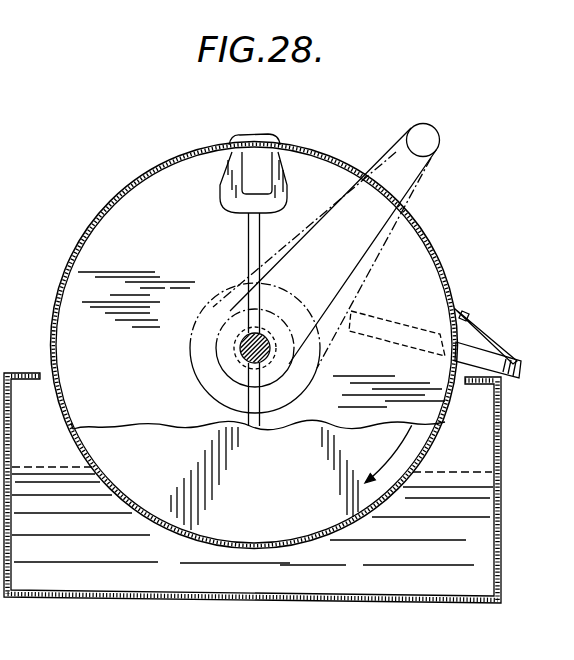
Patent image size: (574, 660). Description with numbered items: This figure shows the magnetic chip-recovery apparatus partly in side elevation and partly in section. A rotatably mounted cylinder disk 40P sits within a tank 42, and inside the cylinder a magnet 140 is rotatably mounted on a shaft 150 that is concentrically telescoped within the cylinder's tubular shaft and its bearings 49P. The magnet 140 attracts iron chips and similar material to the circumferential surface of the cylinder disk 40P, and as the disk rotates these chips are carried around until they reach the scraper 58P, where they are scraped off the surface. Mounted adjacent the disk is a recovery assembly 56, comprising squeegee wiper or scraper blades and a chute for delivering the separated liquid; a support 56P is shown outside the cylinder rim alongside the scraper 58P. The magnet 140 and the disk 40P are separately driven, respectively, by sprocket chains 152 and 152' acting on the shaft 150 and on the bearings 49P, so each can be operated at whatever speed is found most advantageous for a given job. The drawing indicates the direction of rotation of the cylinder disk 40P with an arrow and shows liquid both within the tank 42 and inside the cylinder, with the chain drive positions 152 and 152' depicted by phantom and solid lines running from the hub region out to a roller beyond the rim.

The cylinder disk 40P is at (99, 217).
The tank 42 is at (62, 597).
The bearings 49P is at (233, 362).
The magnet 140 is at (218, 199).
The shaft 150 is at (264, 340).
The sprocket chain 152 is at (351, 260).
The sprocket chain 152' is at (335, 244).
The recovery assembly 56 is at (392, 318).
The blade support 56P is at (489, 335).
The scraper 58P is at (460, 311).